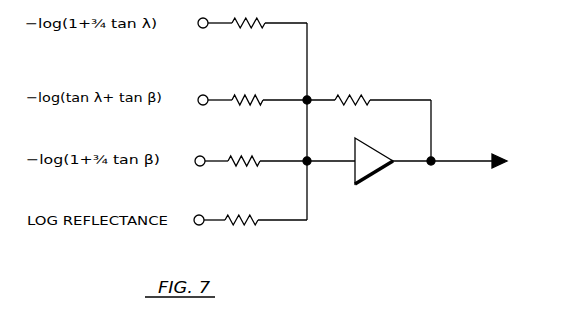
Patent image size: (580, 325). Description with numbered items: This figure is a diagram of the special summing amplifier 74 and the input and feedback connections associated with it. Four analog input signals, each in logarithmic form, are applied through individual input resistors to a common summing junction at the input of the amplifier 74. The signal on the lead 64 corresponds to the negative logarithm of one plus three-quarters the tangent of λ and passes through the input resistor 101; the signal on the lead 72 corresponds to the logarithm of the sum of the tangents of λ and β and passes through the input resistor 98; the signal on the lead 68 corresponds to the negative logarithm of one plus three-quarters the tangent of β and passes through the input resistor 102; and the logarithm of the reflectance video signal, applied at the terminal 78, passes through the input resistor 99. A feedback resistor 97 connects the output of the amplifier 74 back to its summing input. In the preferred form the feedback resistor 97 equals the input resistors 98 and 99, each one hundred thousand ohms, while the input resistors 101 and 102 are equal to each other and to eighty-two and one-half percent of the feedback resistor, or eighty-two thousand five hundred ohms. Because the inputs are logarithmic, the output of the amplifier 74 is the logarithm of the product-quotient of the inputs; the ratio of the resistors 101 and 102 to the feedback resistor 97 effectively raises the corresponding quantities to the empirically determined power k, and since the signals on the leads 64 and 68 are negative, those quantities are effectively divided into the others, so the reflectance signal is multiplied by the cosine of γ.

The input lead 64 is at (199, 27).
The lead 72 is at (199, 103).
The input lead 68 is at (197, 164).
The input terminal for log reflectance signal 78 is at (196, 223).
The input resistor 101 is at (262, 28).
The input resistor 98 is at (239, 105).
The input resistor 102 is at (232, 166).
The input resistor 99 is at (232, 225).
The feedback resistor 97 is at (359, 103).
The summing amplifier 74 is at (378, 171).